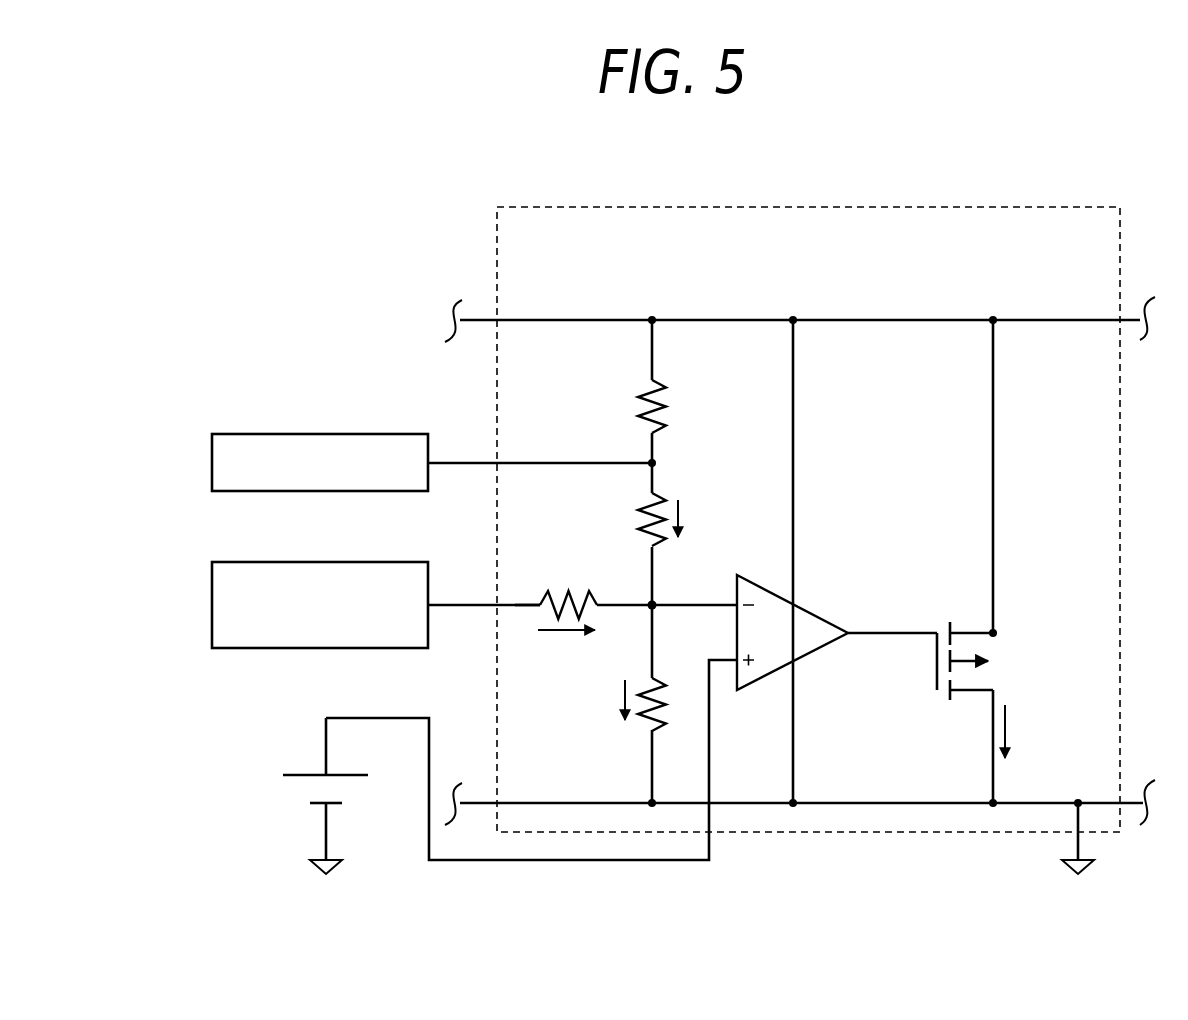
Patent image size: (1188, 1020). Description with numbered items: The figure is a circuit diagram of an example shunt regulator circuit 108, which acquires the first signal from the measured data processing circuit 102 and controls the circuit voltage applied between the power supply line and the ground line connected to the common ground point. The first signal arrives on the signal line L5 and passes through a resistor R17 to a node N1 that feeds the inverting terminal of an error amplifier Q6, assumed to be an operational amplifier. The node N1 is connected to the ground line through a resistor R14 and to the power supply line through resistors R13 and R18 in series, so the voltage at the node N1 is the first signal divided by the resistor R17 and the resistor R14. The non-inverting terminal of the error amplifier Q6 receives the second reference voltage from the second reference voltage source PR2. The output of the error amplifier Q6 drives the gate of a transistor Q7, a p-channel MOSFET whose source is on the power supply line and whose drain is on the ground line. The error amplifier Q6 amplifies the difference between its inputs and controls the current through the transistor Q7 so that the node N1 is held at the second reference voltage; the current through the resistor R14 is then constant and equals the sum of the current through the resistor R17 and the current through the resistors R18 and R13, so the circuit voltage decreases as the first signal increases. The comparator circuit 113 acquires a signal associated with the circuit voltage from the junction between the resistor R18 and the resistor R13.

The shunt regulator circuit 108 is at (632, 206).
The comparator circuit 113 is at (212, 462).
The measured data processing circuit 102 is at (212, 604).
The resistor R18 is at (672, 406).
The resistor R13 is at (633, 519).
The resistor R14 is at (672, 704).
The resistor R17 is at (568, 590).
The signal line L5 is at (516, 604).
The node N1 is at (655, 608).
The error amplifier Q6 is at (792, 632).
The transistor Q7 is at (930, 686).
The second reference voltage source PR2 is at (301, 789).